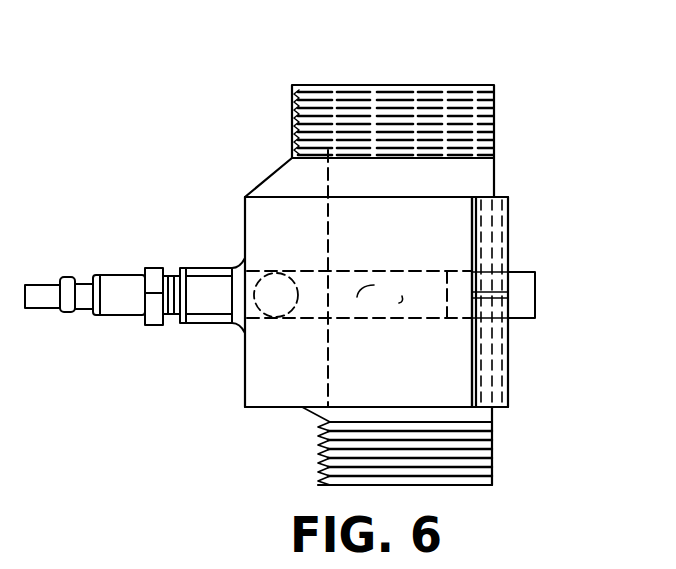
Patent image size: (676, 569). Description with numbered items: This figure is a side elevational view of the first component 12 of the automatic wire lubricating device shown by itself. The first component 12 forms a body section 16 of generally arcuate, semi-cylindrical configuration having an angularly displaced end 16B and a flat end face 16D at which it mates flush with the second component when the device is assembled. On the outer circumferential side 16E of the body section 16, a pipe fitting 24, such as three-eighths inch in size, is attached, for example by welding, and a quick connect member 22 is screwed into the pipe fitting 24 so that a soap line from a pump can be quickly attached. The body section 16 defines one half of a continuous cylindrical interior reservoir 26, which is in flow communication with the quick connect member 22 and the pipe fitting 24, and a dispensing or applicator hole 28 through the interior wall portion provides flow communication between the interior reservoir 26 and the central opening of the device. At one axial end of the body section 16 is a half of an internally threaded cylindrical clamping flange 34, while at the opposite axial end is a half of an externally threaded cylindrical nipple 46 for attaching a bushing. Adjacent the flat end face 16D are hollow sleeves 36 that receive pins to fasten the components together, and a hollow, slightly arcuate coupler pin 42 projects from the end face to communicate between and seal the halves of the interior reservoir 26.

The first component 12 is at (538, 60).
The body section 16 is at (242, 212).
The angularly displaced end 16B is at (476, 173).
The flat end face 16D is at (496, 186).
The outer circumferential side 16E is at (243, 360).
The quick connect member 22 is at (83, 313).
The pipe fitting 24 is at (152, 268).
The interior reservoir 26 is at (283, 290).
The dispensing or applicator hole 28 is at (402, 296).
The internally threaded cylindrical clamping flange 34 is at (383, 84).
The sleeve 36 is at (510, 233).
The coupler pin 42 is at (535, 297).
The externally threaded cylindrical nipple 46 is at (320, 458).